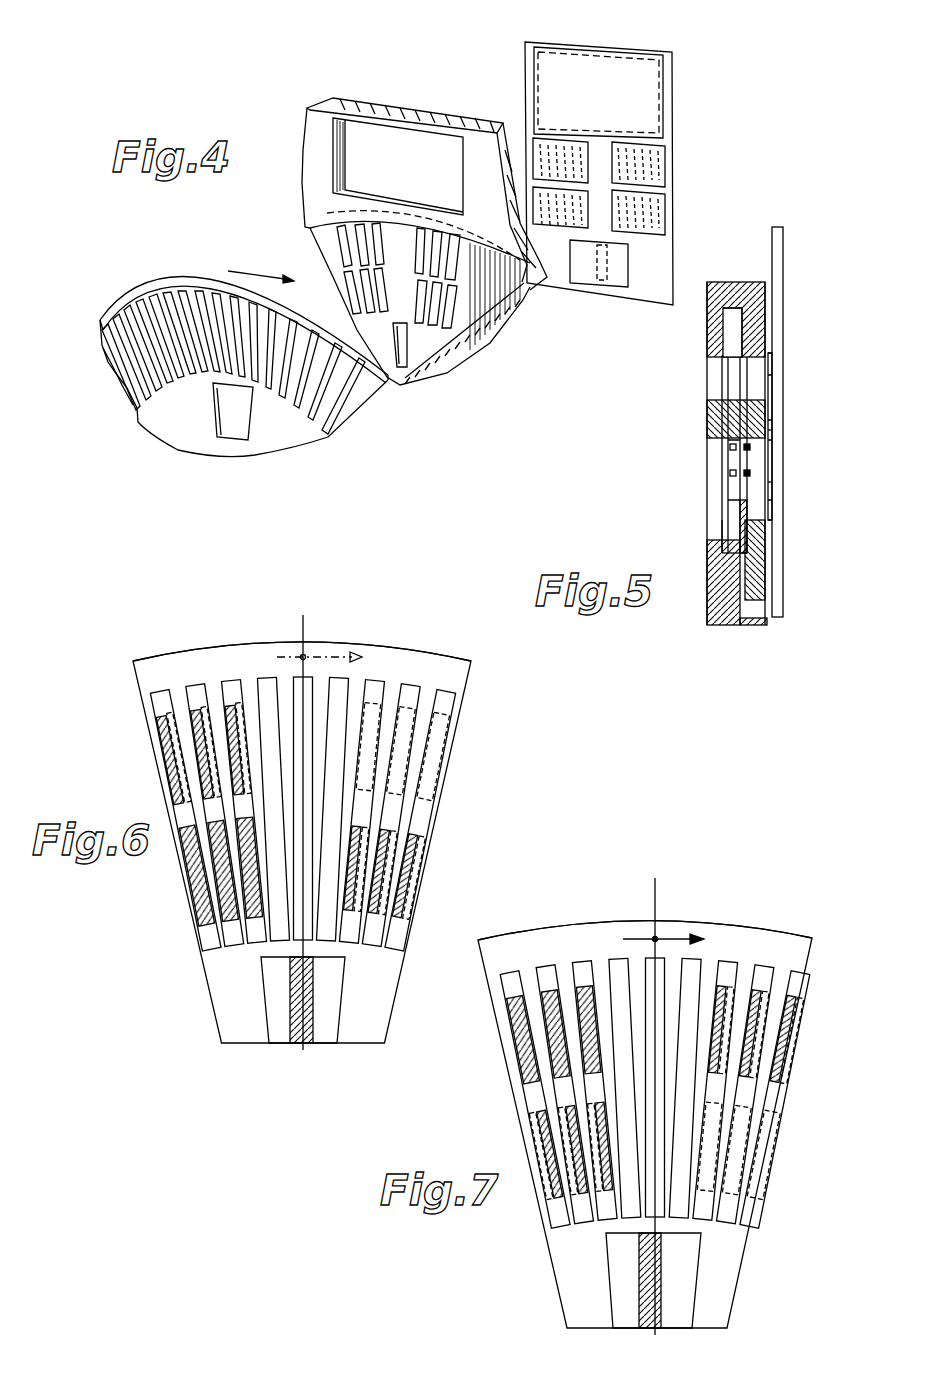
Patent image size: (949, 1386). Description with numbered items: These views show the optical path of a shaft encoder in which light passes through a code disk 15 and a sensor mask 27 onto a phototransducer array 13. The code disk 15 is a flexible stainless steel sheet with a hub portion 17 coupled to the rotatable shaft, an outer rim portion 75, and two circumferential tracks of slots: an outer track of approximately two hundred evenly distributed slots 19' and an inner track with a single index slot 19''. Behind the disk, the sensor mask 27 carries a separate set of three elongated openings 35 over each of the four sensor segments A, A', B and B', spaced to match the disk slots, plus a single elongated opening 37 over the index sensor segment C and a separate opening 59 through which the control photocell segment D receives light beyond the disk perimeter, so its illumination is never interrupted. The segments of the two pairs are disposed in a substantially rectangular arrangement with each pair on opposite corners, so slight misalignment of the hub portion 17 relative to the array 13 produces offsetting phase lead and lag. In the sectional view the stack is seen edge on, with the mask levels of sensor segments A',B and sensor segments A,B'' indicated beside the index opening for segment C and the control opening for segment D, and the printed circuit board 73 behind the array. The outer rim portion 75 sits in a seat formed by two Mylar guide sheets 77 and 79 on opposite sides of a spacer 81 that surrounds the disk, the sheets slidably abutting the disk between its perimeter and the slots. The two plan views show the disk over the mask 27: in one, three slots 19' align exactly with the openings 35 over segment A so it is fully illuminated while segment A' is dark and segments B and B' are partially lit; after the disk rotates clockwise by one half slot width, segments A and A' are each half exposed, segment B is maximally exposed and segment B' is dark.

In FIG. 4, the phototransducer array 13 is at (663, 257).
In FIG. 5, the phototransducer array 13 is at (770, 436).
In FIG. 4, the code disk 15 is at (284, 440).
In FIG. 6, the code disk 15 is at (215, 1002).
In FIG. 7, the code disk 15 is at (560, 1260).
In FIG. 5, the hub portion 17 is at (737, 550).
In FIG. 4, the outer track slots 19' is at (237, 398).
In FIG. 5, the outer track slots 19' is at (694, 470).
In FIG. 6, the outer track slots 19' is at (302, 770).
In FIG. 7, the outer track slots 19' is at (661, 1055).
In FIG. 4, the index slot 19'' is at (241, 444).
In FIG. 5, the index slot 19'' is at (686, 527).
In FIG. 6, the index slot 19'' is at (281, 1027).
In FIG. 7, the index slot 19'' is at (707, 1280).
In FIG. 4, the sensor mask 27 is at (427, 367).
In FIG. 5, the sensor mask 27 is at (712, 393).
In FIG. 4, the elongated openings 35 is at (463, 280).
In FIG. 5, the elongated openings 35 is at (747, 473).
In FIG. 6, the elongated openings 35 is at (420, 842).
In FIG. 7, the elongated openings 35 is at (757, 1077).
In FIG. 4, the elongated opening 37 is at (397, 370).
In FIG. 5, the elongated opening 37 is at (747, 503).
In FIG. 6, the elongated opening 37 is at (313, 1027).
In FIG. 7, the elongated opening 37 is at (653, 1270).
In FIG. 4, the opening 59 is at (385, 135).
In FIG. 5, the printed circuit board 73 is at (783, 317).
In FIG. 4, the outer rim portion 75 is at (152, 292).
In FIG. 6, the outer rim portion 75 is at (202, 652).
In FIG. 7, the outer rim portion 75 is at (533, 933).
In FIG. 5, the guide sheet 77 is at (725, 313).
In FIG. 5, the guide sheet 79 is at (743, 313).
In FIG. 5, the spacer 81 is at (718, 310).
In FIG. 4, the sensor segment A is at (528, 170).
In FIG. 4, the sensor segment B is at (533, 155).
In FIG. 4, the sensor segment A' is at (676, 150).
In FIG. 4, the sensor segment B' is at (667, 204).
In FIG. 4, the sensor segment C is at (617, 283).
In FIG. 5, the sensor segment C is at (773, 510).
In FIG. 4, the photocell segment D is at (663, 50).
In FIG. 5, the photocell segment D is at (777, 392).
In FIG. 5, the sensor segments A' and B A',B is at (818, 416).
In FIG. 5, the sensor segments A and B' A,B'' is at (827, 487).